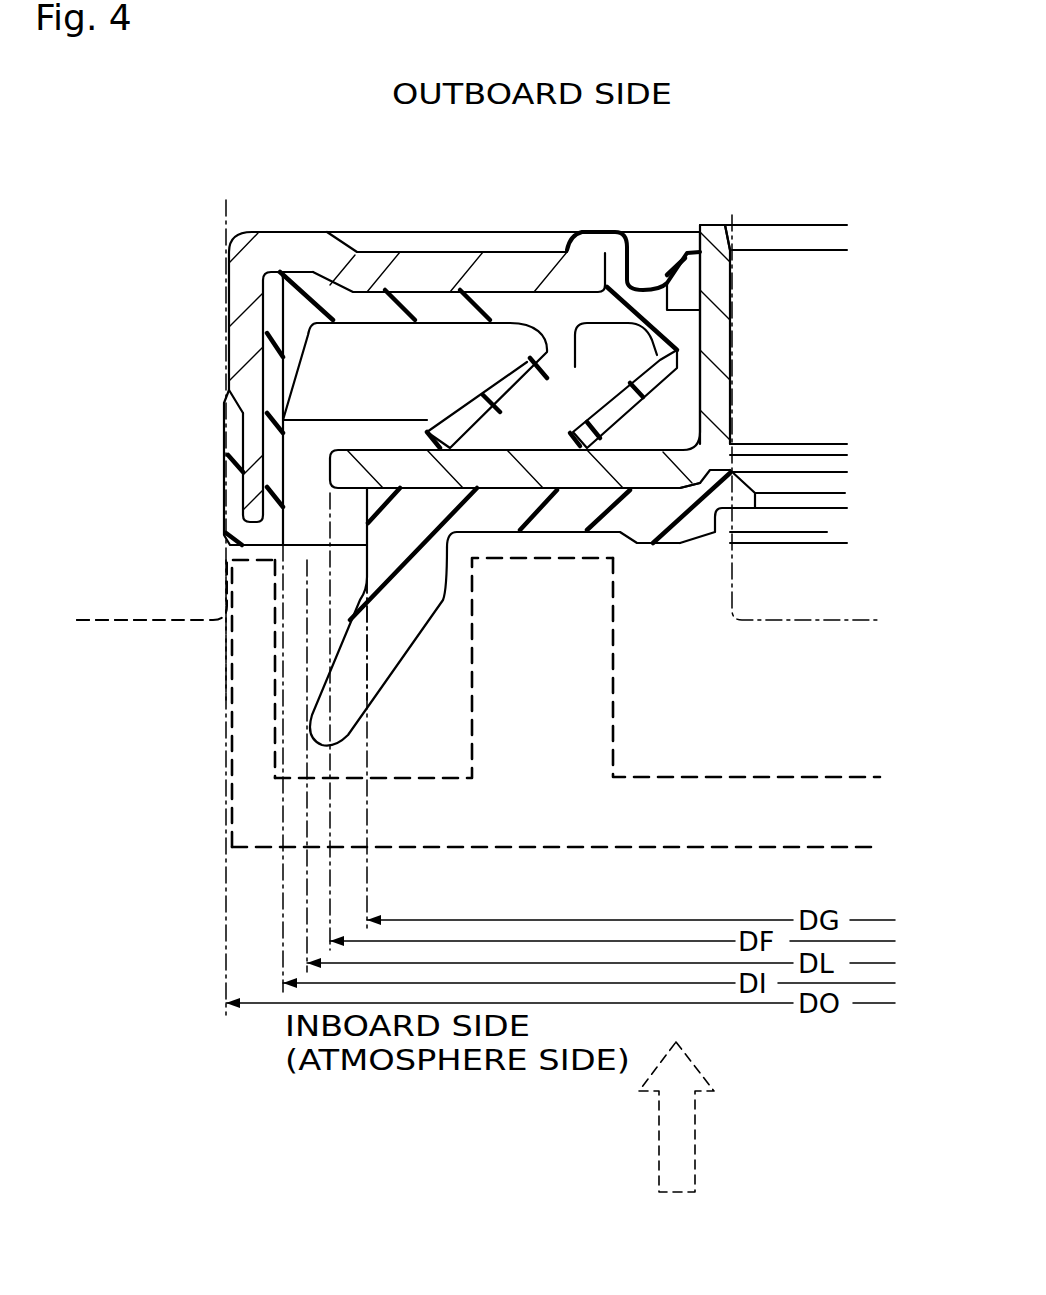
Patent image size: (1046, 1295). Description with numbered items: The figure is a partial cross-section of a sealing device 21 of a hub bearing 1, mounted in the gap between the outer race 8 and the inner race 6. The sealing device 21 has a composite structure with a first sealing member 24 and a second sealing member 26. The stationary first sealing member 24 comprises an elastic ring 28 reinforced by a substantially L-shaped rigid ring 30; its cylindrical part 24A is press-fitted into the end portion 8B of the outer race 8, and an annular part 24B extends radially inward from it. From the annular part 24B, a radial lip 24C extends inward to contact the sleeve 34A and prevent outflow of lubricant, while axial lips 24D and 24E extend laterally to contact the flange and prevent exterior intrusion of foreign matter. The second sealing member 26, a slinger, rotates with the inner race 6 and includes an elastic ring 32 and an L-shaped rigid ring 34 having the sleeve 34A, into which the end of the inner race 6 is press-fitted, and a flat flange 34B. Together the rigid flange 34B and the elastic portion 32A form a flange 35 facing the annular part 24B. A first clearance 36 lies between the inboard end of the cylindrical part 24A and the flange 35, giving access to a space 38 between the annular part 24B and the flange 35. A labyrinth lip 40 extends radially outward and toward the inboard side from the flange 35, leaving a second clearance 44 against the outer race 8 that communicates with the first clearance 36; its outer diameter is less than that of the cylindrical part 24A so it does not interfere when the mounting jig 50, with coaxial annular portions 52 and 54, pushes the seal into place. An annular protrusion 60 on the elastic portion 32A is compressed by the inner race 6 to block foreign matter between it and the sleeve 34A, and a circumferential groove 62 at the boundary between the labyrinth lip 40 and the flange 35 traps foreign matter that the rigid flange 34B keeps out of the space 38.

The hub bearing 1 is at (205, 708).
The inner race 6 is at (757, 620).
The outer race 8 is at (120, 622).
The end portion of the outer race 8B is at (95, 622).
The sealing device 21 is at (413, 683).
The first sealing member 24 is at (290, 201).
The cylindrical part 24A is at (243, 315).
The annular part 24B is at (375, 258).
The radial lip 24C is at (663, 270).
The axial lip 24D is at (510, 397).
The axial lip 24E is at (620, 402).
The second sealing member 26 is at (665, 596).
The elastic ring 28 is at (590, 245).
The rigid ring 30 is at (303, 245).
The elastic ring 32 is at (530, 495).
The elastic portion of the flange 32A is at (557, 505).
The rigid ring 34 is at (733, 333).
The sleeve 34A is at (733, 310).
The flange 34B is at (640, 477).
The flange 35 is at (490, 520).
The first clearance 36 is at (297, 452).
The space 38 is at (343, 353).
The labyrinth lip 40 is at (402, 653).
The second clearance 44 is at (250, 615).
The mounting jig 50 is at (666, 848).
The circular annular portion 52 is at (227, 737).
The circular annular portion 54 is at (615, 688).
The annular protrusion 60 is at (740, 500).
The circumferential groove 62 is at (357, 497).